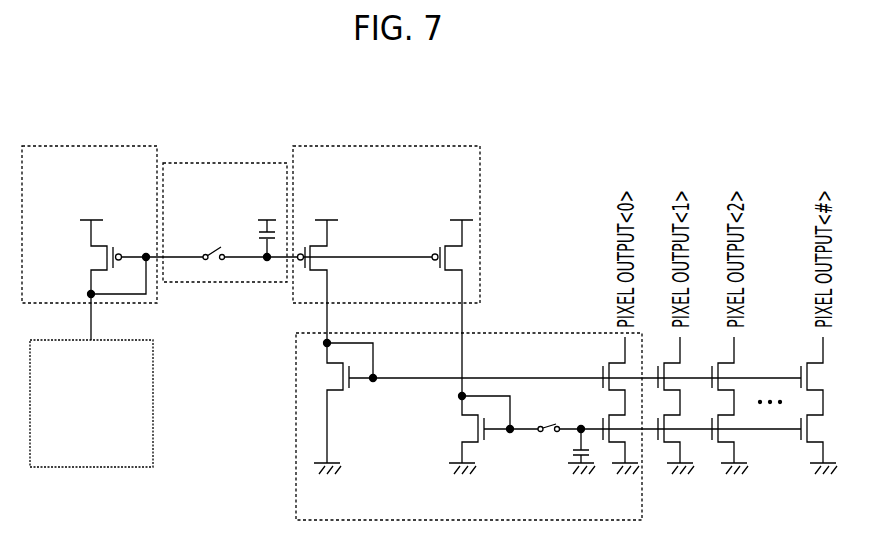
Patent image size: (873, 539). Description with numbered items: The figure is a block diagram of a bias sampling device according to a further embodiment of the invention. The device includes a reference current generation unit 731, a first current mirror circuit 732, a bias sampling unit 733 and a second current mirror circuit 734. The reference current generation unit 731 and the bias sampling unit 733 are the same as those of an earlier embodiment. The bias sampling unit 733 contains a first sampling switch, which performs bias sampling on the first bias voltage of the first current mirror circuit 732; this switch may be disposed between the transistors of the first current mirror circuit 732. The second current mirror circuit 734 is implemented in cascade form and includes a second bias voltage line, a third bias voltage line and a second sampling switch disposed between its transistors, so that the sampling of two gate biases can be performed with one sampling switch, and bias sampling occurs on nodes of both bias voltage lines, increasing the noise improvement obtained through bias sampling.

The reference current generation unit 731 is at (62, 338).
The first current mirror circuit 732 is at (115, 146).
The bias sampling unit 733 is at (200, 165).
The second current mirror circuit 734 is at (539, 333).